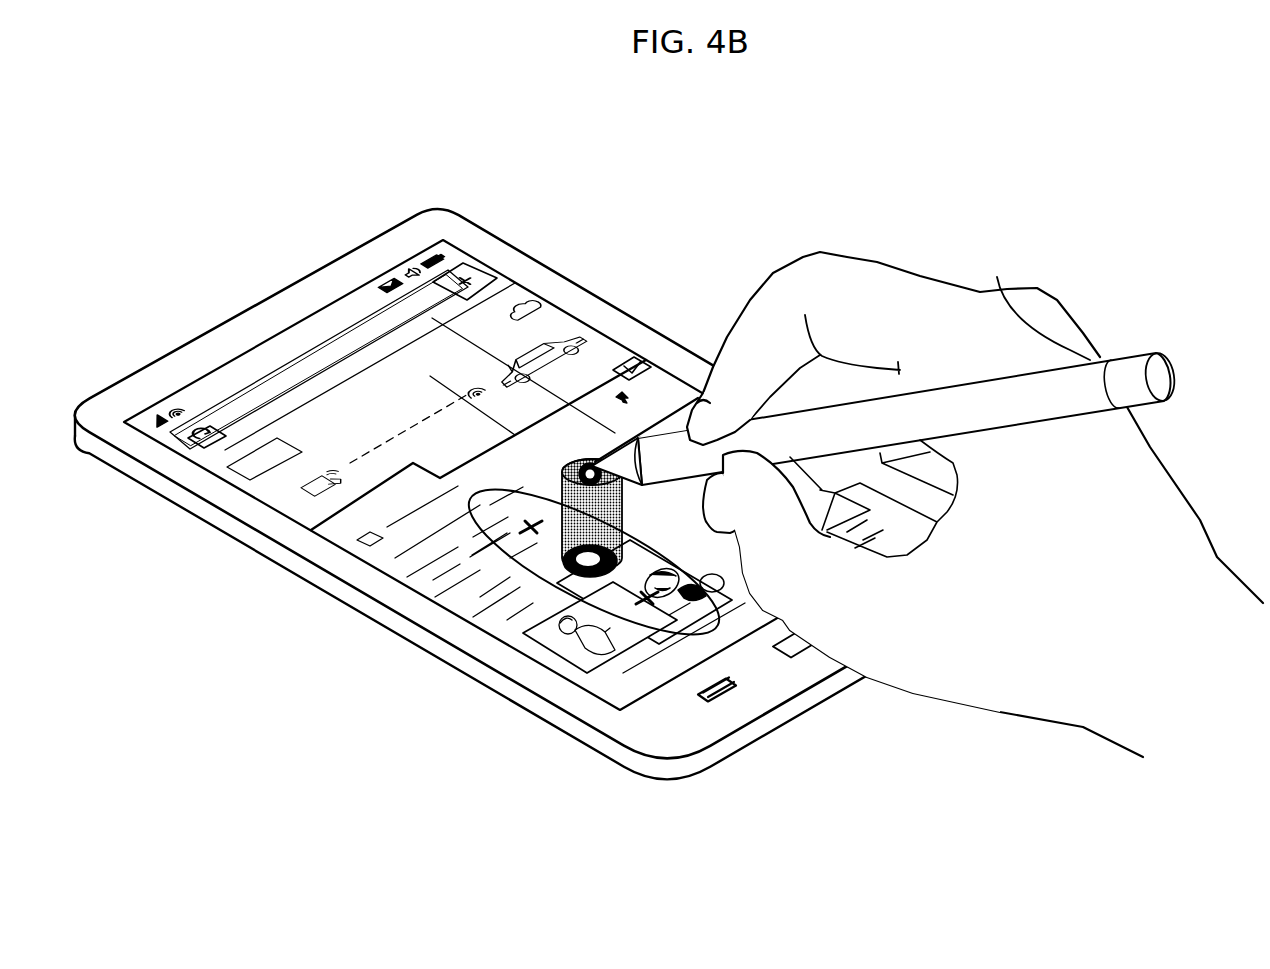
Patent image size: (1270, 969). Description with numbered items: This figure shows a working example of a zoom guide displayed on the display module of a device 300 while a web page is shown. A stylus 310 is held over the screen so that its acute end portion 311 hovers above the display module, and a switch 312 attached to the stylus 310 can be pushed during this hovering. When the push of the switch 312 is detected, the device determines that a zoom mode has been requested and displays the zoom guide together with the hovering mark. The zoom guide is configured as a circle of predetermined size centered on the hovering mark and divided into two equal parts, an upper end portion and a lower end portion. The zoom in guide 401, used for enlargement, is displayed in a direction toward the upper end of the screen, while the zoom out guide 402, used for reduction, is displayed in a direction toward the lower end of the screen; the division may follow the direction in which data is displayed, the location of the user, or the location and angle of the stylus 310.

The device 300 is at (549, 513).
The stylus 310 is at (885, 350).
The acute end portion 311 is at (593, 463).
The switch 312 is at (750, 420).
The zoom in guide 401 is at (508, 528).
The zoom out guide 402 is at (642, 612).